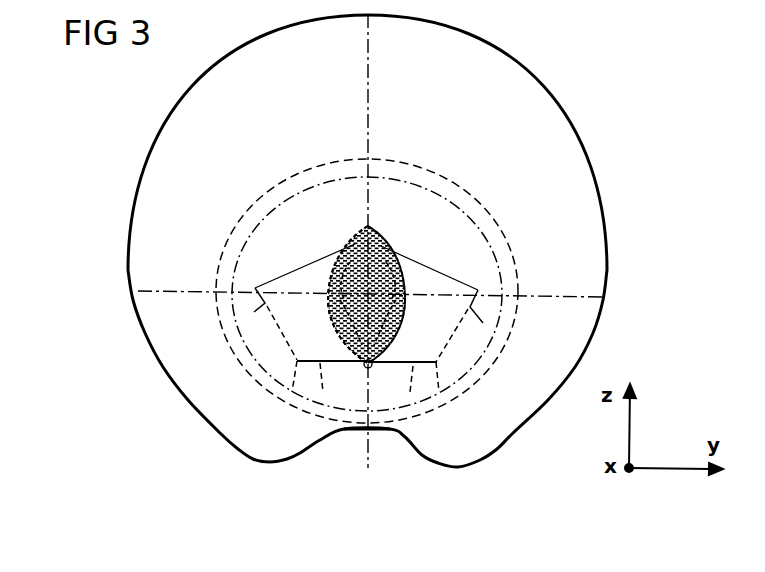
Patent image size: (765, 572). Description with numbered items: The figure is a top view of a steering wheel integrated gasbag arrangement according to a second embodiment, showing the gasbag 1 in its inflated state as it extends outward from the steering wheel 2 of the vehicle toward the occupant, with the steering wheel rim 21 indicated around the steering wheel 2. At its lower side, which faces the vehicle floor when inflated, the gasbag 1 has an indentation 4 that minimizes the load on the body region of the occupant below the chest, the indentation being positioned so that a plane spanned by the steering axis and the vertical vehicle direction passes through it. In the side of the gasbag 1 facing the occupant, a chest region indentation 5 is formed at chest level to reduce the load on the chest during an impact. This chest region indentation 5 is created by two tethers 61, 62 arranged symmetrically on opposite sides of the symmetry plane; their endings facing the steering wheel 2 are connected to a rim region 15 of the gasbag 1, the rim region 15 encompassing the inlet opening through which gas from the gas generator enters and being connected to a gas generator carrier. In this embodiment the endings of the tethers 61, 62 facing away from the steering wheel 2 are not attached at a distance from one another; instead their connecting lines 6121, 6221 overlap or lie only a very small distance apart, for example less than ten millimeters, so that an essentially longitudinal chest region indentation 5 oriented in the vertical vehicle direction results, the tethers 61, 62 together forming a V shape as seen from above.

The gasbag 1 is at (580, 80).
The steering wheel 2 is at (438, 166).
The reflector inner edge 21 is at (468, 206).
The rim region 15 is at (340, 287).
The chest region indentation 5 is at (382, 335).
The tether 61 is at (348, 245).
The tether 62 is at (390, 250).
The connecting line 6121 is at (365, 364).
The connecting line 6221 is at (373, 363).
The indentation 4 is at (389, 470).